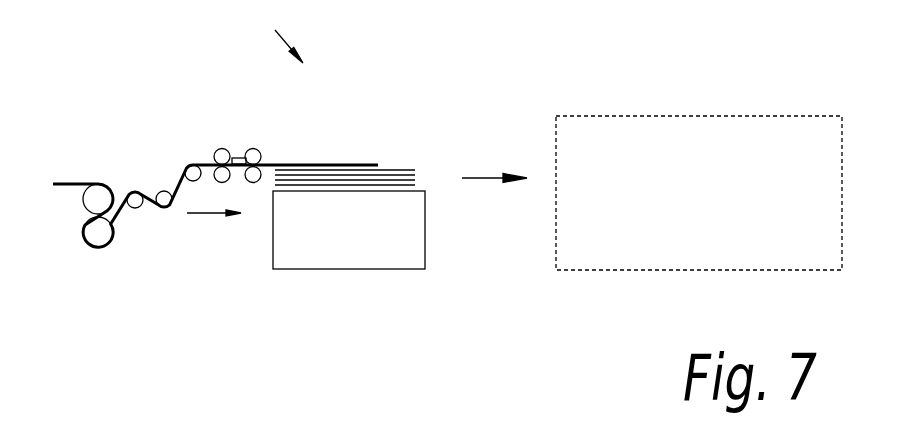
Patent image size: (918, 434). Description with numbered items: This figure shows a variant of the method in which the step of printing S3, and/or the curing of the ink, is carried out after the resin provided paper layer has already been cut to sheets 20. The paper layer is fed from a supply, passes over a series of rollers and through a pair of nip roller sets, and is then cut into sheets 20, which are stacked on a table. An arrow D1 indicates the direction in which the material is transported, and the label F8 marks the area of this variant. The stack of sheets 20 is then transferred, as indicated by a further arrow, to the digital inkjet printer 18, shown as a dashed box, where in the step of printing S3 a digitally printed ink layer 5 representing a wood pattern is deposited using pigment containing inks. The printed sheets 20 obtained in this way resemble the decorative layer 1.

The decorative layer 1 is at (199, 155).
The digitally printed ink layer 5 is at (77, 184).
The digital inkjet printer 18 is at (770, 116).
The sheets 20 is at (396, 178).
The transport direction D1 is at (212, 227).
The figure reference arrow F8 is at (275, 36).
The step of printing S3 is at (734, 272).